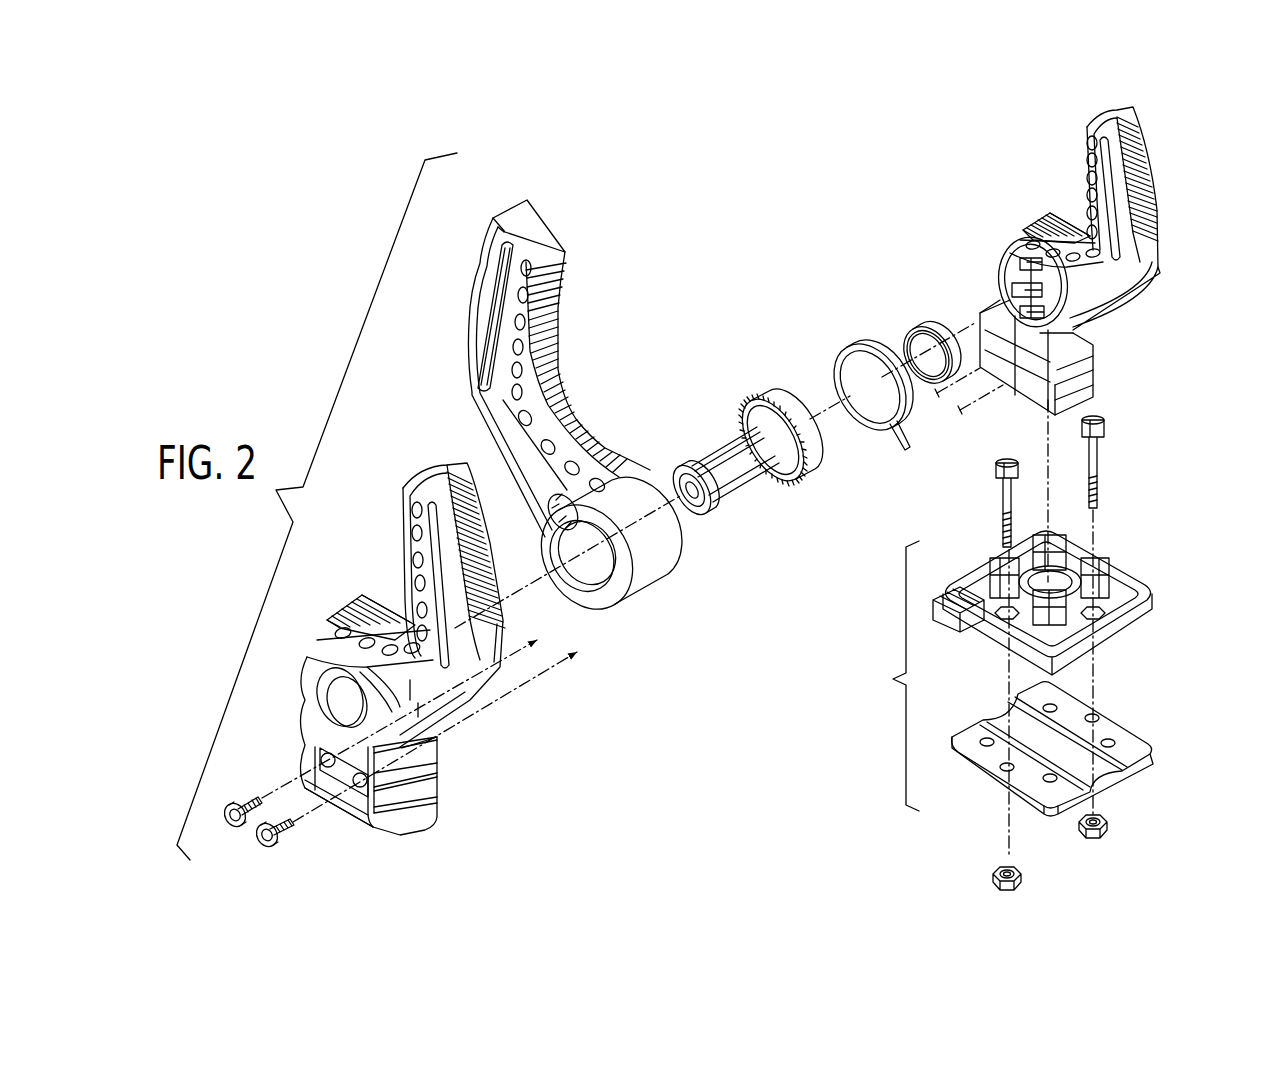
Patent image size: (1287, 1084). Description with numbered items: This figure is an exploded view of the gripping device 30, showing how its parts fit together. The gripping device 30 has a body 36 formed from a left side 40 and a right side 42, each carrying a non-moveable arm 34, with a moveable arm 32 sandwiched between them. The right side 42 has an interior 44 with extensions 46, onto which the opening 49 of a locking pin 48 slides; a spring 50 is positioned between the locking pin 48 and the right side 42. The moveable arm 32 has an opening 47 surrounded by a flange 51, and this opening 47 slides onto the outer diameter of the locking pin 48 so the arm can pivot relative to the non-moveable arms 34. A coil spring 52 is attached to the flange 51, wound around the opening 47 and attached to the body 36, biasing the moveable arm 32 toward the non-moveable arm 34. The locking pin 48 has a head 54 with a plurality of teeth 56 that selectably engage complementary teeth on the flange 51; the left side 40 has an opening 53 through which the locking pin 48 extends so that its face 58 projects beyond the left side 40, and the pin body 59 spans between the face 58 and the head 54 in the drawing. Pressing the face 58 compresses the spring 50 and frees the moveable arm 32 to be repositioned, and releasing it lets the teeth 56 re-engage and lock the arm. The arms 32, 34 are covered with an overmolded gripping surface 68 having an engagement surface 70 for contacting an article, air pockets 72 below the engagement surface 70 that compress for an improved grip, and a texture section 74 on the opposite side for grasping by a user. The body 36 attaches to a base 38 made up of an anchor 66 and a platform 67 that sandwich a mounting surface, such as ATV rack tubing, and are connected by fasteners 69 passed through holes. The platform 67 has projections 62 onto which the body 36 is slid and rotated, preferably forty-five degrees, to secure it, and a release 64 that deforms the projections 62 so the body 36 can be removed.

The gripping device 30 is at (751, 183).
The moveable arm 32 is at (563, 426).
The non-moveable arm 34 is at (485, 642).
The body 36 is at (1094, 348).
The base 38 is at (1035, 645).
The left side 40 is at (391, 715).
The right side 42 is at (1081, 314).
The interior 44 is at (1010, 303).
The extensions 46 is at (1013, 277).
The opening 47 is at (590, 578).
The locking pin 48 is at (752, 443).
The opening 49 is at (821, 449).
The spring 50 is at (925, 325).
The flange 51 is at (613, 564).
The coil spring 52 is at (867, 347).
The opening 53 is at (328, 690).
The head 54 is at (773, 398).
The teeth 56 is at (797, 484).
The face 58 is at (677, 468).
The spool body 59 is at (750, 487).
The projections 62 is at (1068, 606).
The release 64 is at (945, 625).
The anchor 66 is at (1136, 736).
The platform 67 is at (1148, 621).
The gripping surface 68 is at (540, 232).
The fastener 69 is at (1099, 461).
The engagement surface 70 is at (551, 306).
The air pockets 72 is at (1087, 143).
The texture section 74 is at (1150, 160).